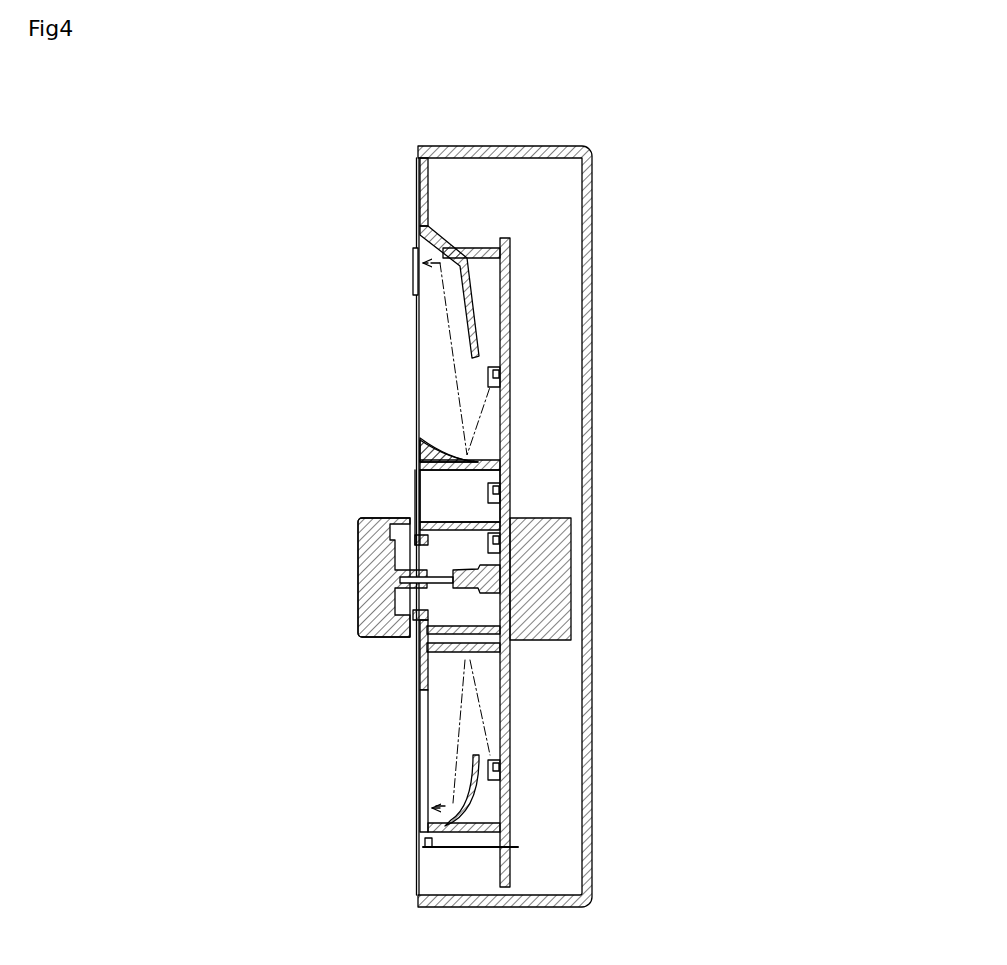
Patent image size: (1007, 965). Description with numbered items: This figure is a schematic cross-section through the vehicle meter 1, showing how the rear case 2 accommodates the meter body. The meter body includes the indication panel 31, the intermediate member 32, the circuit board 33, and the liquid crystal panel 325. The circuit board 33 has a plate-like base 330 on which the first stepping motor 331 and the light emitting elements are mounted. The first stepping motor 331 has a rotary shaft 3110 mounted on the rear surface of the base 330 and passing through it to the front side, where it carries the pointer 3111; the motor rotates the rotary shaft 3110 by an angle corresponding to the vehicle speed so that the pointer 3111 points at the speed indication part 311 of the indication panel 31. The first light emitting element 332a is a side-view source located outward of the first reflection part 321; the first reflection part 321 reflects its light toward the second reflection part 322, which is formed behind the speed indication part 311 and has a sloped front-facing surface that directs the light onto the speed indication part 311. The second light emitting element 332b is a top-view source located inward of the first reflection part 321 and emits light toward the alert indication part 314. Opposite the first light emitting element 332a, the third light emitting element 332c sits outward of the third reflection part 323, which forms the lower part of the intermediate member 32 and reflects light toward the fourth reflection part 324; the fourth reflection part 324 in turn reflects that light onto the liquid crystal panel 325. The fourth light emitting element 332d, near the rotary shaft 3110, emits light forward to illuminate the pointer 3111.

The vehicle meter 1 is at (344, 144).
The rear case 2 is at (552, 895).
The indication panel 31 is at (400, 495).
The speed indication part 311 is at (413, 252).
The alert indication part 314 is at (415, 507).
The pointer 3111 is at (370, 618).
The rotary shaft 3110 is at (447, 587).
The liquid crystal panel 325 is at (418, 718).
The intermediate member 32 is at (614, 525).
The first reflection part 321 is at (500, 453).
The second reflection part 322 is at (508, 240).
The third reflection part 323 is at (465, 655).
The fourth reflection part 324 is at (468, 802).
The circuit board 33 is at (647, 492).
The base 330 is at (512, 308).
The first stepping motor 331 is at (552, 573).
The first light emitting element 332a is at (500, 373).
The second light emitting element 332b is at (500, 493).
The third light emitting element 332c is at (497, 773).
The fourth light emitting element 332d is at (500, 542).